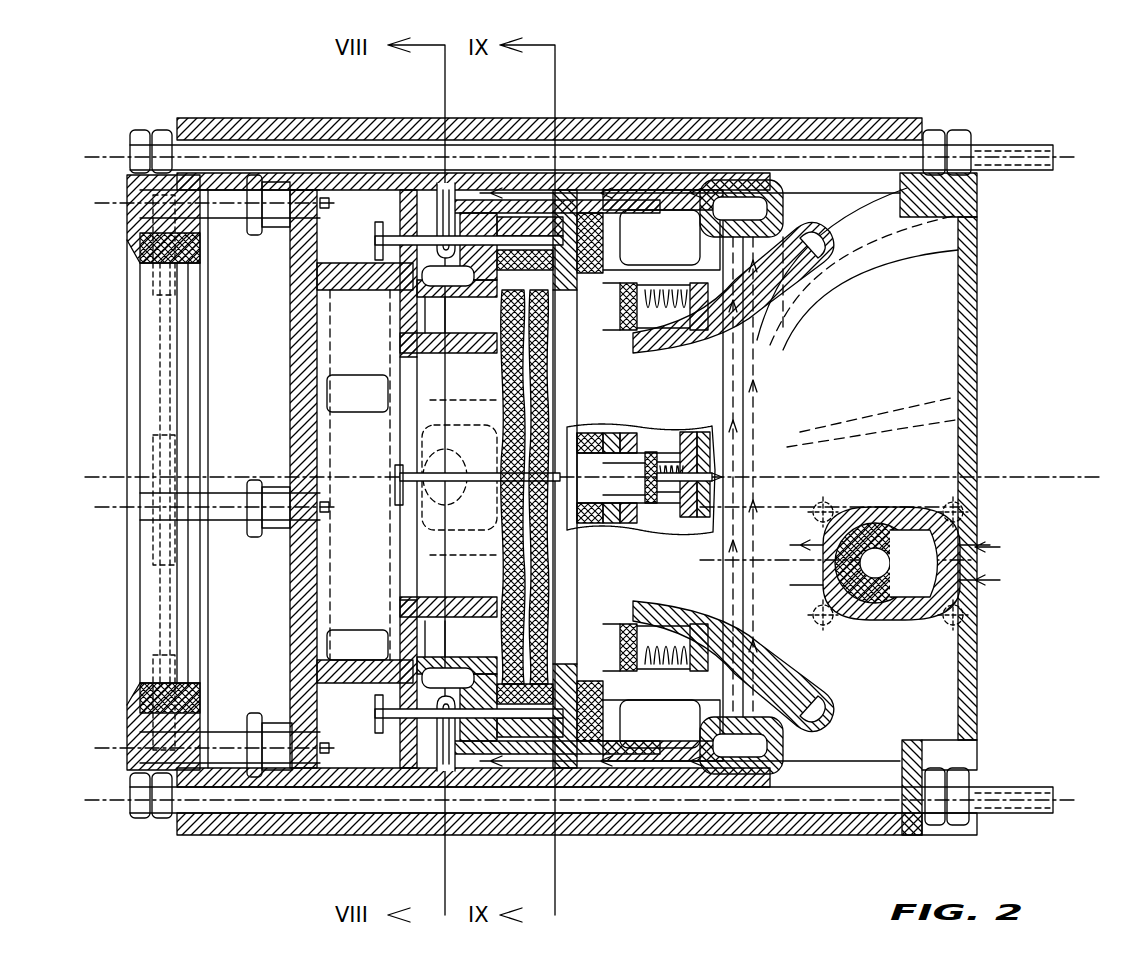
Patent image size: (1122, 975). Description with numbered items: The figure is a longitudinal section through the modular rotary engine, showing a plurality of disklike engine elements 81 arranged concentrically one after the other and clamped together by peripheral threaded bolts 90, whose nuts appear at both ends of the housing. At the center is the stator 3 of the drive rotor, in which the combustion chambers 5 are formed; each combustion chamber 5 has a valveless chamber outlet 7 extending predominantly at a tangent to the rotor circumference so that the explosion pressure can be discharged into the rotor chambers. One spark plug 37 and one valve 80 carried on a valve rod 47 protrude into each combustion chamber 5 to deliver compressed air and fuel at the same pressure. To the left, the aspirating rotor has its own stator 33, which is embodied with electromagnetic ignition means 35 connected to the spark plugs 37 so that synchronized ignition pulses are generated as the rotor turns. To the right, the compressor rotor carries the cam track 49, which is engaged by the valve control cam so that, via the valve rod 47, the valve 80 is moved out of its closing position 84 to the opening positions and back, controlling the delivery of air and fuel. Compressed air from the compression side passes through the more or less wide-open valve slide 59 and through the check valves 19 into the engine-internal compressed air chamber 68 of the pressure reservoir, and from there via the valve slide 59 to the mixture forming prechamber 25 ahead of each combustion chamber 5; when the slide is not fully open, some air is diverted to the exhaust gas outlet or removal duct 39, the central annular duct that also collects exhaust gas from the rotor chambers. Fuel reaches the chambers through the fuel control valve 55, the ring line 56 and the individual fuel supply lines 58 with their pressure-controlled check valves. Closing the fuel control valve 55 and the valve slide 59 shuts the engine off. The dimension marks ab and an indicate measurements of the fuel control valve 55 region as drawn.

The stator 3 is at (345, 285).
The combustion chamber 5 is at (325, 238).
The chamber outlet 7 is at (350, 390).
The check valve 19 is at (620, 315).
The mixture forming prechamber 25 is at (422, 193).
The stator of aspirating rotor 33 is at (160, 265).
The electromagnetic ignition means 35 is at (140, 236).
The spark plug 37 is at (228, 218).
The exhaust gas outlet or removal duct 39 is at (850, 222).
The valve rod 47 is at (520, 236).
The cam track 49 is at (522, 420).
The fuel control valve 55 is at (960, 535).
The ring line 56 is at (787, 182).
The fuel supply line 58 is at (473, 220).
The valve slide 59 is at (588, 222).
The compressed air chamber 68 is at (660, 238).
The valve 80 is at (380, 235).
The disklike engine element 81 is at (248, 835).
The closing position 84 is at (420, 470).
The threaded bolt 90 is at (160, 130).
The dimension ab is at (866, 520).
The dimension an is at (888, 680).